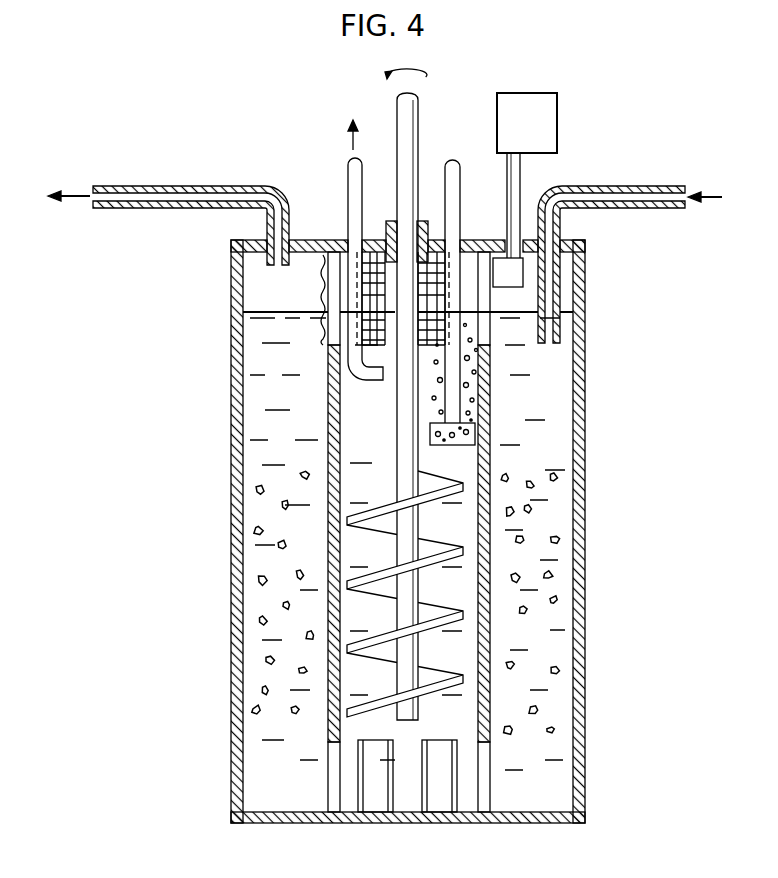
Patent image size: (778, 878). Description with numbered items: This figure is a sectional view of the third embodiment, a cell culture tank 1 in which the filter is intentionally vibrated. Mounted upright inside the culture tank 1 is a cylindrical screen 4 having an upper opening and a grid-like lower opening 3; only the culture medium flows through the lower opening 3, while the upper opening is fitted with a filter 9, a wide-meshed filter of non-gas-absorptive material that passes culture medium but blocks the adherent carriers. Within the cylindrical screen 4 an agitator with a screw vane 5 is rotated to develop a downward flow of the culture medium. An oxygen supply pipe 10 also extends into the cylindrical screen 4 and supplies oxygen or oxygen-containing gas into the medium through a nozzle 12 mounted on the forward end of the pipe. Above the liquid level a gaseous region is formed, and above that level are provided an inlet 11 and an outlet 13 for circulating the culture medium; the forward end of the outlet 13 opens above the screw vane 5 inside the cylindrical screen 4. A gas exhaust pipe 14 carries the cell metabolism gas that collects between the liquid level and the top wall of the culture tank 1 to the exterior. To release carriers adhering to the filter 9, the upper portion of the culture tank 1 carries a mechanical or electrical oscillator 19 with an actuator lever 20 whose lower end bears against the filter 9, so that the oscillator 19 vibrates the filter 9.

The cell culture tank 1 is at (585, 672).
The lower opening 3 is at (483, 780).
The cylindrical screen 4 is at (490, 530).
The screw vane 5 is at (445, 603).
The filter 9 is at (322, 293).
The oxygen supply pipe 10 is at (460, 184).
The inlet 11 is at (628, 188).
The nozzle 12 is at (478, 437).
The outlet 13 is at (347, 183).
The gas exhaust pipe 14 is at (185, 190).
The oscillator 19 is at (548, 117).
The actuator lever 20 is at (513, 233).